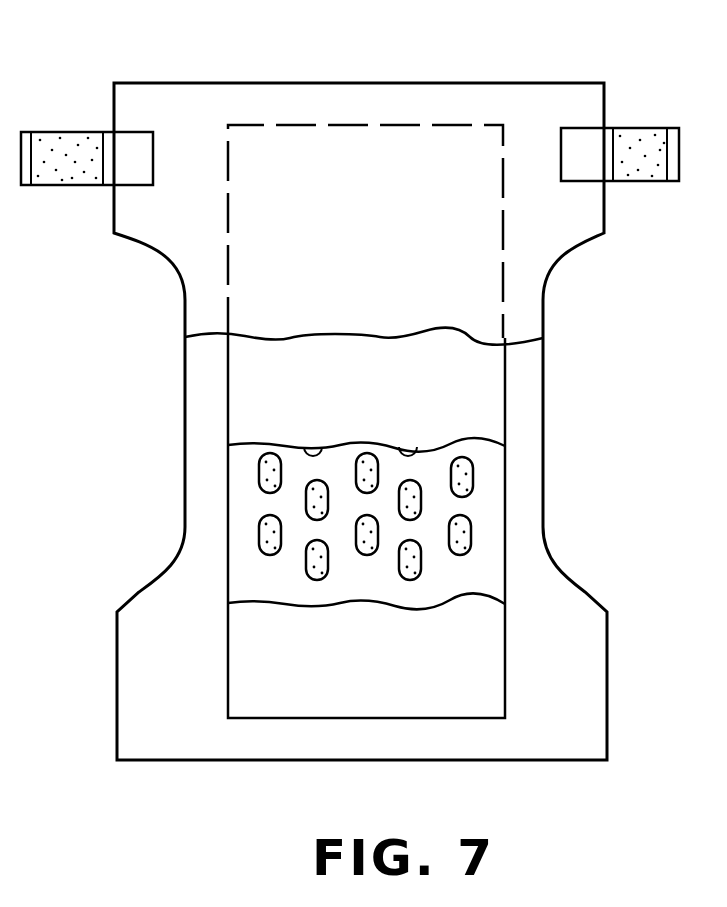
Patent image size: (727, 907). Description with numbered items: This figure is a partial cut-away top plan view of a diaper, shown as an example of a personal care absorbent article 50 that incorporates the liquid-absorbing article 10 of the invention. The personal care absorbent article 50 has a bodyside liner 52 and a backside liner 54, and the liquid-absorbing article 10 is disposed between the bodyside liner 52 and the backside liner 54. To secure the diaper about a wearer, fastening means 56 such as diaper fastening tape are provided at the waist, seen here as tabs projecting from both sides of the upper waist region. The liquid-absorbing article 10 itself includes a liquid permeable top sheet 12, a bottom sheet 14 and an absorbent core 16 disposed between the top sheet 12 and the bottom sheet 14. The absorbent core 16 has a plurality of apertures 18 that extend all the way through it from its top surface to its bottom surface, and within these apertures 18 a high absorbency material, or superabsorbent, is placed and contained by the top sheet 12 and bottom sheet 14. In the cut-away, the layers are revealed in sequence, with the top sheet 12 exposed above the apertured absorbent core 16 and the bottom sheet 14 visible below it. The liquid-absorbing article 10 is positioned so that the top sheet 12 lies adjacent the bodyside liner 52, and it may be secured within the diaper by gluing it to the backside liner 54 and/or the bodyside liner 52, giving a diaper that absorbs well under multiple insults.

The liquid-absorbing article 10 is at (216, 492).
The top sheet 12 is at (378, 410).
The bottom sheet 14 is at (382, 673).
The absorbent core 16 is at (243, 574).
The apertures 18 is at (470, 530).
The personal care absorbent article 50 is at (233, 72).
The bodyside liner 52 is at (197, 235).
The backside liner 54 is at (191, 725).
The fastening means 56 is at (78, 148).